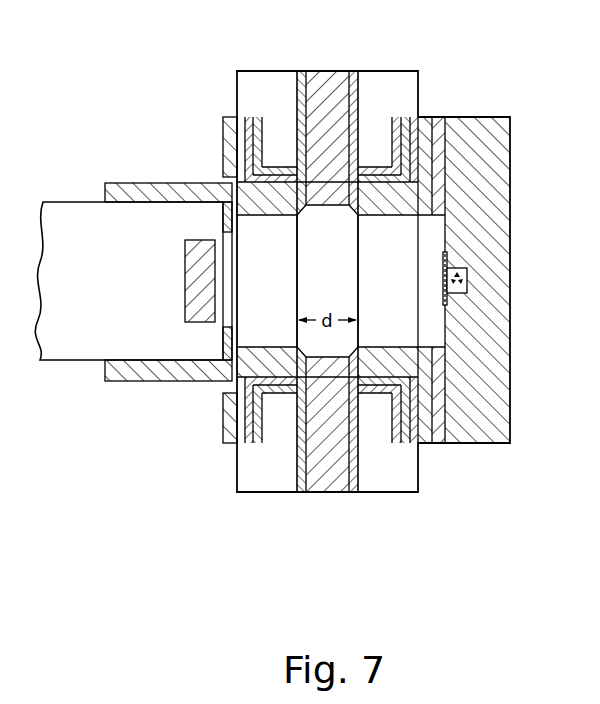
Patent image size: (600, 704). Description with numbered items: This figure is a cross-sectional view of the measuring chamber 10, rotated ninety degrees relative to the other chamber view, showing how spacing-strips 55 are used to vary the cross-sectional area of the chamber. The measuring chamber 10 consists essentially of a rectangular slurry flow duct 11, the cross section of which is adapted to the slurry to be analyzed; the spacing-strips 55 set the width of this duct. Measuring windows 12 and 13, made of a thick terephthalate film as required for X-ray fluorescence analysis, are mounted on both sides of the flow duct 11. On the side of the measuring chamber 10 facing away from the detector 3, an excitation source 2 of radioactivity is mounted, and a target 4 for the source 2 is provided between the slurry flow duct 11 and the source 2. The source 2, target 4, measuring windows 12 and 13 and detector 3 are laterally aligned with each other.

The spacing-strips 55 is at (334, 72).
The detector 3 is at (185, 281).
The measuring chamber 10 is at (323, 240).
The slurry flow duct 11 is at (337, 279).
The measuring window 12 is at (296, 290).
The measuring window 13 is at (362, 252).
The target 4 is at (447, 260).
The excitation source 2 is at (467, 287).